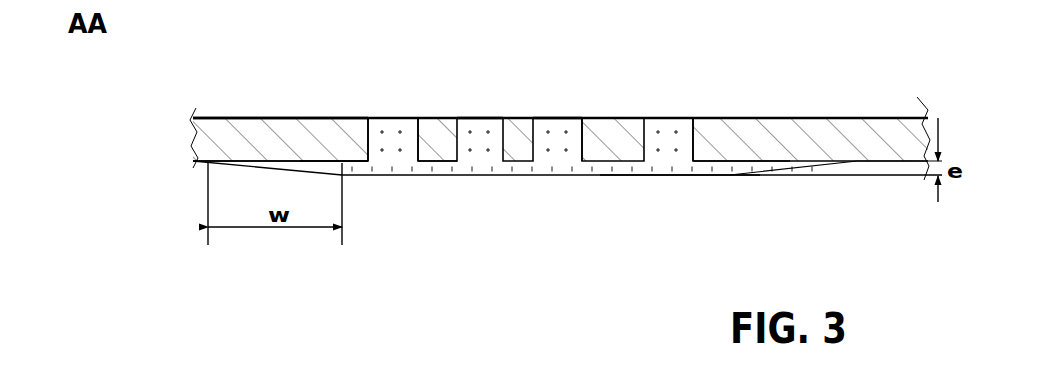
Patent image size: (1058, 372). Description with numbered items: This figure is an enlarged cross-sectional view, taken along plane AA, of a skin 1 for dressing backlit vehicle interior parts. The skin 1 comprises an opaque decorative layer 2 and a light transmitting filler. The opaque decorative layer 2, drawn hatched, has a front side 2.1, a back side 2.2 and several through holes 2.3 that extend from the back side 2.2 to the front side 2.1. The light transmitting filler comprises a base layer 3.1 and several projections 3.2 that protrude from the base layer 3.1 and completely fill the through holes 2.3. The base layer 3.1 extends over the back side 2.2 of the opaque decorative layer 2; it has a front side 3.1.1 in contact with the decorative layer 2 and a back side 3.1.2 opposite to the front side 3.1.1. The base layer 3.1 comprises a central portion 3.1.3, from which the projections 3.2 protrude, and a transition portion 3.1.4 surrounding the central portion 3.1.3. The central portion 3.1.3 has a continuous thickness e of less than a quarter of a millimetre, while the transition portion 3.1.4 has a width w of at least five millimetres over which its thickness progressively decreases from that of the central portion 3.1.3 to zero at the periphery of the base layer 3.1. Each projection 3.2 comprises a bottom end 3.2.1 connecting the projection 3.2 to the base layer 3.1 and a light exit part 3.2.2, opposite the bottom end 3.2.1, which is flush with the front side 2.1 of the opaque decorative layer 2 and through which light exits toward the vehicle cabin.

The skin 1 is at (652, 50).
The opaque decorative layer 2 is at (297, 125).
The front side 2.1 is at (217, 117).
The back side 2.2 is at (200, 162).
The through holes 2.3 is at (693, 143).
The base layer 3.1 is at (358, 168).
The front side 3.1.1 is at (332, 158).
The back side 3.1.2 is at (685, 176).
The central portion 3.1.3 is at (442, 167).
The transition portion 3.1.4 is at (753, 163).
The projections 3.2 is at (487, 145).
The bottom end 3.2.1 is at (390, 157).
The light exit part 3.2.2 is at (553, 118).